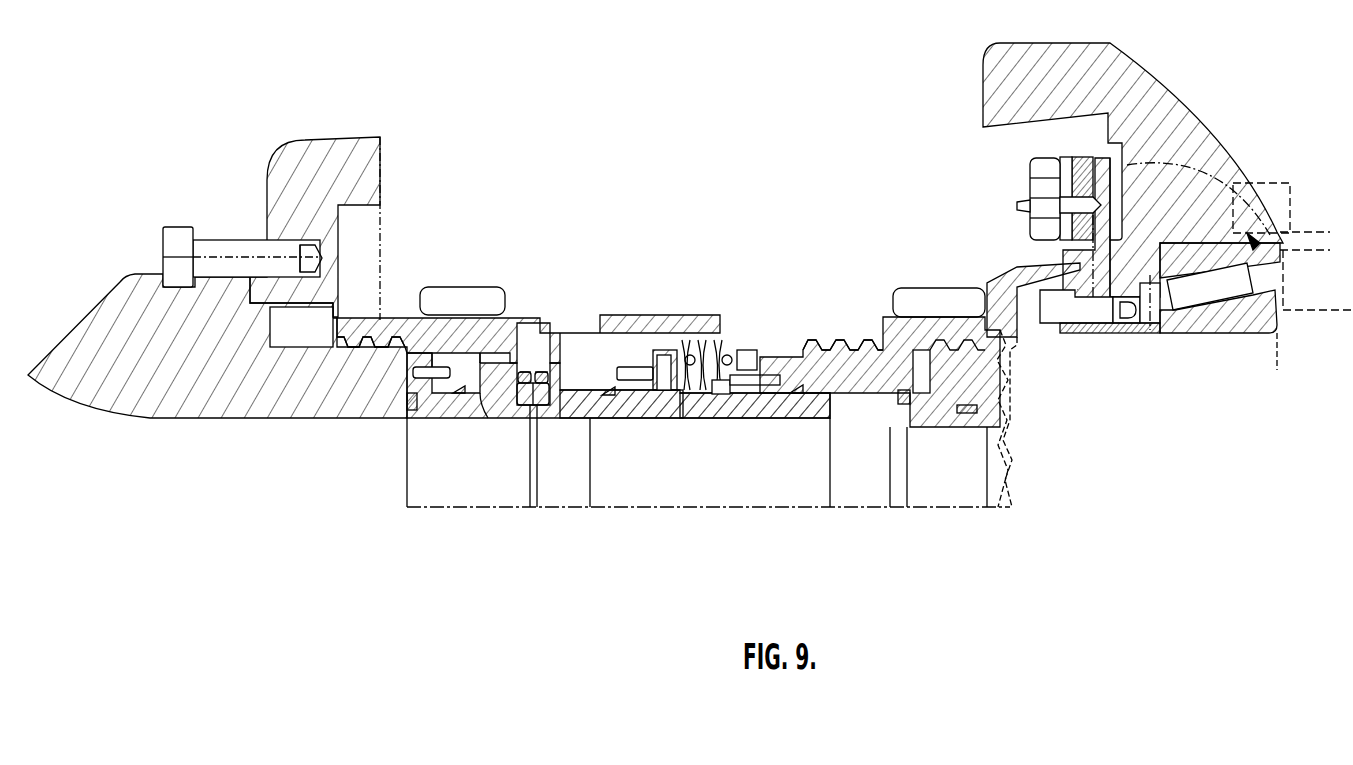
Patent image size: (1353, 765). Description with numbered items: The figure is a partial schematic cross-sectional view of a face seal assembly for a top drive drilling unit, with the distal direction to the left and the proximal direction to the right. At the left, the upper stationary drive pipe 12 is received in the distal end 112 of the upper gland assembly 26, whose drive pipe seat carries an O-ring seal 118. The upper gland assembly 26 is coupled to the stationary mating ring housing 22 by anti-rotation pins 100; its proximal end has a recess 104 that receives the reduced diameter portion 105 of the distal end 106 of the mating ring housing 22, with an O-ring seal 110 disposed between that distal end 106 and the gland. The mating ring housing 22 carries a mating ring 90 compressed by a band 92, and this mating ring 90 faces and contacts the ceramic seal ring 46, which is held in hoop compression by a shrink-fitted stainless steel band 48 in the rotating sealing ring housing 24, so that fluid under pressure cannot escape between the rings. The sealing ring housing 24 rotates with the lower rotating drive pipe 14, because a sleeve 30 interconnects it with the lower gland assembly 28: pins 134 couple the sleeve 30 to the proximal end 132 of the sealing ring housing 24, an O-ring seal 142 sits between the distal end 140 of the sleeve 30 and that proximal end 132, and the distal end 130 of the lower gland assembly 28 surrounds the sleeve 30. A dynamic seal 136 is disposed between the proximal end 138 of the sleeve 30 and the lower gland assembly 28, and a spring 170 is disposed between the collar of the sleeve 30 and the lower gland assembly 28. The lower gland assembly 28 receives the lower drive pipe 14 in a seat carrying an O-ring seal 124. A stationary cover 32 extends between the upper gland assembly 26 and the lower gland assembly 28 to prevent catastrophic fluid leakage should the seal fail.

The upper stationary drive pipe 12 is at (213, 410).
The lower rotating drive pipe 14 is at (1000, 377).
The mating ring housing 22 is at (495, 413).
The sealing ring housing 24 is at (565, 423).
The upper gland assembly 26 is at (465, 297).
The lower gland assembly 28 is at (943, 327).
The sleeve 30 is at (760, 407).
The stationary cover 32 is at (608, 315).
The ceramic seal ring 46 is at (550, 390).
The band 48 is at (555, 365).
The mating ring 90 is at (538, 372).
The band 92 is at (527, 372).
The anti-rotation pins 100 is at (438, 360).
The recess 104 is at (442, 372).
The reduced diameter portion 105 is at (468, 363).
The distal end of mating ring housing 106 is at (477, 360).
The O-ring seal 110 is at (458, 397).
The distal end of upper gland assembly 112 is at (367, 323).
The O-ring seal 118 is at (412, 403).
The O-ring seal 124 is at (910, 407).
The distal end of lower gland assembly 130 is at (842, 363).
The proximal end of sealing ring housing 132 is at (657, 363).
The pins 134 is at (693, 393).
The dynamic seal 136 is at (797, 387).
The proximal end of sleeve 138 is at (818, 407).
The distal end of sleeve 140 is at (632, 370).
The O-ring seal 142 is at (610, 388).
The spring 170 is at (698, 390).